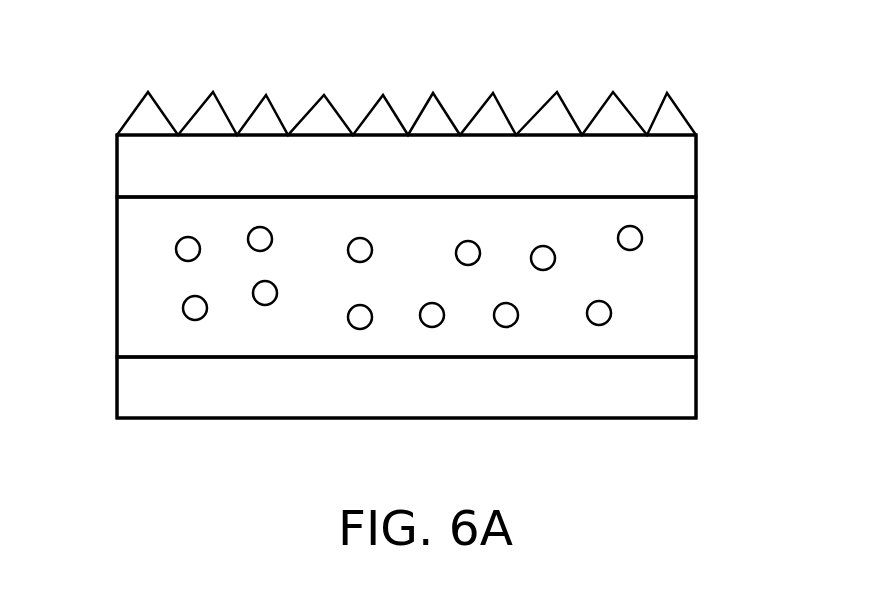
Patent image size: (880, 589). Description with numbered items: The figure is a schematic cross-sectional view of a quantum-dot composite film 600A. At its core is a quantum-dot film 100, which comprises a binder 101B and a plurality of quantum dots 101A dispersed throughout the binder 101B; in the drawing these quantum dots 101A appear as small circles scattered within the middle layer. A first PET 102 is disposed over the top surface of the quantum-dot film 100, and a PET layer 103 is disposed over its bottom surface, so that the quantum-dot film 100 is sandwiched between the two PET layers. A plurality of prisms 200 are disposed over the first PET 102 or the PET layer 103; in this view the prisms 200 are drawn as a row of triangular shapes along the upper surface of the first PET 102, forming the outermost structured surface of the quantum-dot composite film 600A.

The quantum-dot composite film 600A is at (818, 49).
The quantum-dot film 100 is at (700, 278).
The quantum dots 101A is at (185, 252).
The binder 101B is at (162, 338).
The first PET 102 is at (668, 166).
The PET layer 103 is at (672, 391).
The prisms 200 is at (322, 93).